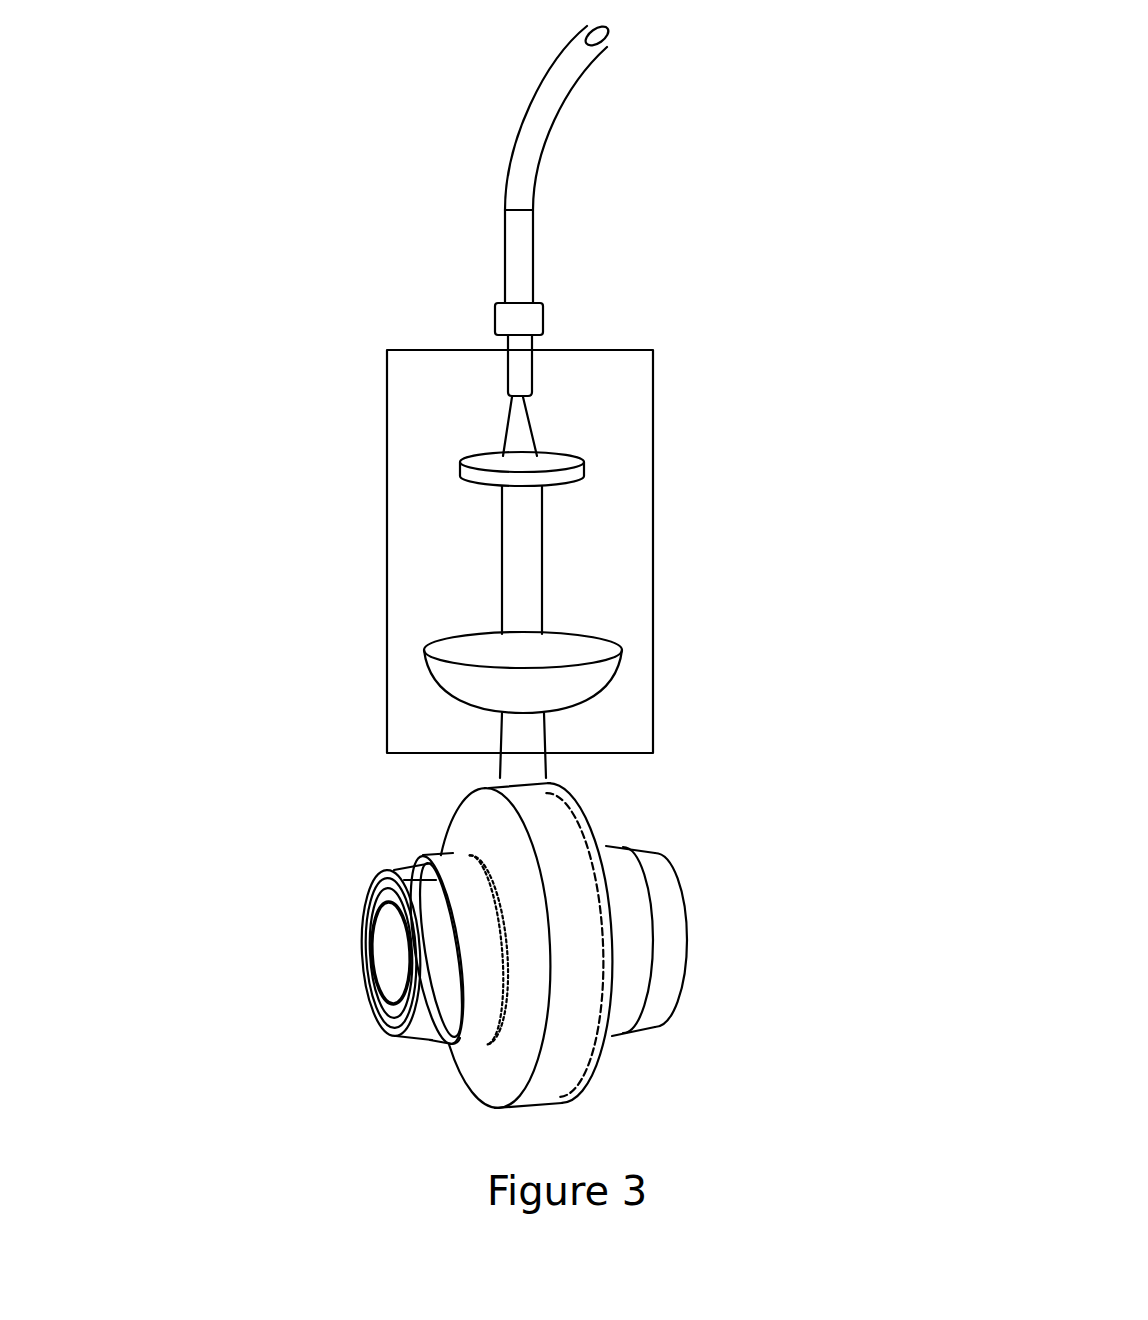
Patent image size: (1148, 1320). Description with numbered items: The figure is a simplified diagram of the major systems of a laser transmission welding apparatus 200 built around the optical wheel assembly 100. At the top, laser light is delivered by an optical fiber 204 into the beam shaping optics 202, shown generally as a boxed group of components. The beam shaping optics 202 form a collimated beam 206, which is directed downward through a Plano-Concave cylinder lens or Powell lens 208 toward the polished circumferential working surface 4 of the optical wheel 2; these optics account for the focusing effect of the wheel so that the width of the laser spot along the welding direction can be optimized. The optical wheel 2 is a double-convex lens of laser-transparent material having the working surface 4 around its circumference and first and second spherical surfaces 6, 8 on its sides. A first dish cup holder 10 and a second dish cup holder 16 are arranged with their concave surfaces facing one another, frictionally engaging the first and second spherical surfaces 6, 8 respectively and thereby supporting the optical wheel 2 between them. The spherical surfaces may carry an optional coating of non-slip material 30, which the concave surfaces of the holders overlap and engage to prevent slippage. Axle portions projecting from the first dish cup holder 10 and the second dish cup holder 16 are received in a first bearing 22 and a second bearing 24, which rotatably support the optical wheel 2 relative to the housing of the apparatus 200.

The laser transmission welding apparatus 200 is at (247, 242).
The beam shaping optics 202 is at (754, 478).
The optical fiber 204 is at (572, 120).
The collimated beam 206 is at (487, 577).
The Powell lens 208 is at (628, 678).
The optical wheel assembly 100 is at (723, 993).
The optical wheel 2 is at (448, 813).
The working surface 4 is at (548, 828).
The first spherical surface 6 is at (483, 1070).
The second spherical surface 8 is at (610, 1010).
The first dish cup holder 10 is at (460, 1038).
The second dish cup holder 16 is at (610, 860).
The first bearing 22 is at (408, 872).
The second bearing 24 is at (672, 942).
The non-slip material 30 is at (492, 1012).